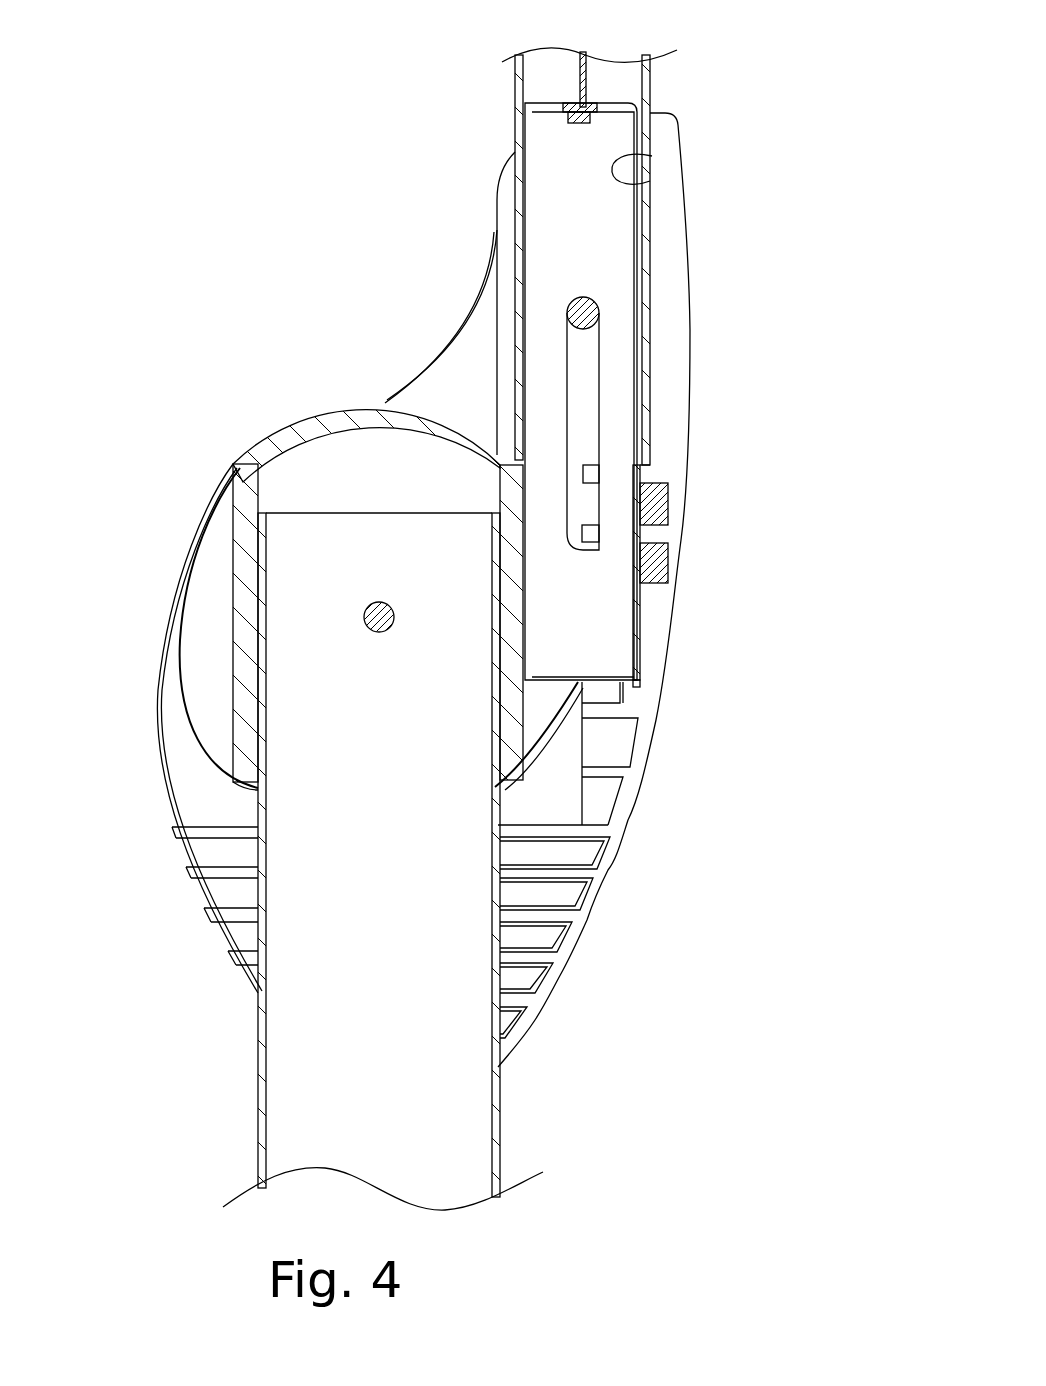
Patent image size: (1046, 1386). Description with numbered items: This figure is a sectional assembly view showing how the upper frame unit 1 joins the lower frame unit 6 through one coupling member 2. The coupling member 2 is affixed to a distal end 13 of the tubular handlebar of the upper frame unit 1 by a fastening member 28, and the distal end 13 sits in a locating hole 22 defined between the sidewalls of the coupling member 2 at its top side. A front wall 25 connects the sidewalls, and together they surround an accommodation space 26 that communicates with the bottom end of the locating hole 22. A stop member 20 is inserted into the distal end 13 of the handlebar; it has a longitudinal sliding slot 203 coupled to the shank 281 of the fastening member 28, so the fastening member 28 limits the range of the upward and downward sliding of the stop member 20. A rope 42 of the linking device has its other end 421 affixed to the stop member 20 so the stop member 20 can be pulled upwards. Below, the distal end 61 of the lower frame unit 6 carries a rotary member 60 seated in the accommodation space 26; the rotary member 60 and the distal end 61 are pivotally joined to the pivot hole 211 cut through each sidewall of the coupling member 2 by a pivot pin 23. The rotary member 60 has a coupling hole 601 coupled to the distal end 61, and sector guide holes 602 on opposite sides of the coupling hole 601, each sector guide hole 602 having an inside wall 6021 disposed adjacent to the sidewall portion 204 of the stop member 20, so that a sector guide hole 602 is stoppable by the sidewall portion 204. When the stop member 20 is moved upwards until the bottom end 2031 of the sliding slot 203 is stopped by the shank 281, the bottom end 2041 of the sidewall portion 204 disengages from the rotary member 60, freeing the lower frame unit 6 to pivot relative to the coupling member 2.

The upper frame unit 1 is at (668, 82).
The rope 42 is at (587, 82).
The other end of rope 421 is at (593, 123).
The distal end of U-shaped handlebar 13 is at (648, 158).
The locating hole 22 is at (652, 206).
The coupling member 2 is at (706, 290).
The shank of fastening member 281 is at (598, 313).
The front wall 25 is at (690, 349).
The fastening member 28 is at (582, 328).
The longitudinal sliding slot 203 is at (598, 407).
The stop member 20 is at (655, 478).
The bottom end of longitudinal sliding slot 2031 is at (580, 546).
The sidewall portion 204 is at (533, 588).
The bottom end of sidewall portion 2041 is at (533, 678).
The accommodation space 26 is at (458, 388).
The rotary member 60 is at (273, 435).
The distal end of lower frame unit 61 is at (355, 596).
The pivot pin 23 is at (368, 617).
The pivot hole 211 is at (368, 628).
The coupling hole 601 is at (258, 708).
The sector guide hole 602 is at (222, 742).
The inside wall of sector guide hole 6021 is at (523, 732).
The lower frame unit 6 is at (240, 1132).